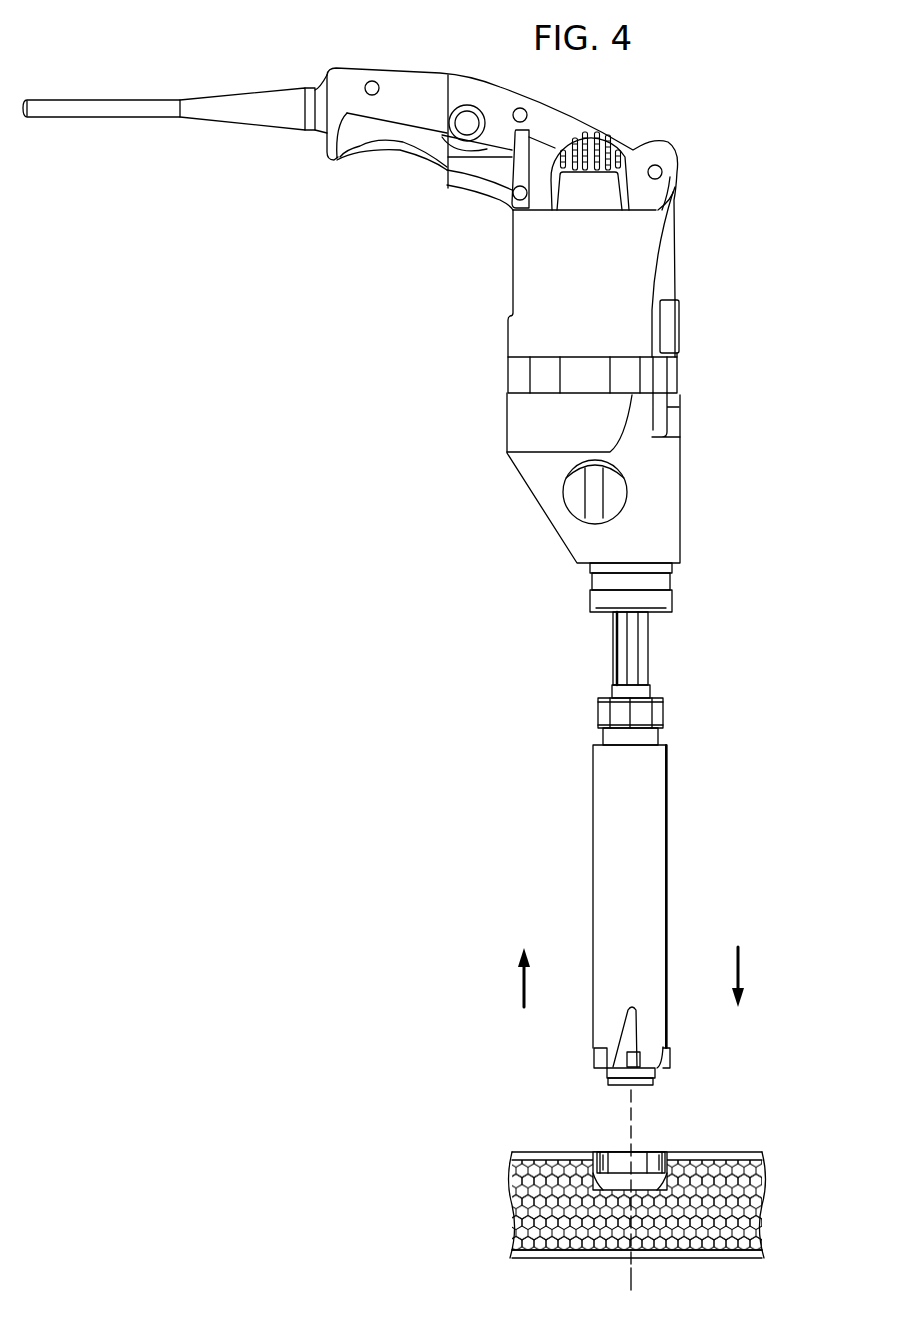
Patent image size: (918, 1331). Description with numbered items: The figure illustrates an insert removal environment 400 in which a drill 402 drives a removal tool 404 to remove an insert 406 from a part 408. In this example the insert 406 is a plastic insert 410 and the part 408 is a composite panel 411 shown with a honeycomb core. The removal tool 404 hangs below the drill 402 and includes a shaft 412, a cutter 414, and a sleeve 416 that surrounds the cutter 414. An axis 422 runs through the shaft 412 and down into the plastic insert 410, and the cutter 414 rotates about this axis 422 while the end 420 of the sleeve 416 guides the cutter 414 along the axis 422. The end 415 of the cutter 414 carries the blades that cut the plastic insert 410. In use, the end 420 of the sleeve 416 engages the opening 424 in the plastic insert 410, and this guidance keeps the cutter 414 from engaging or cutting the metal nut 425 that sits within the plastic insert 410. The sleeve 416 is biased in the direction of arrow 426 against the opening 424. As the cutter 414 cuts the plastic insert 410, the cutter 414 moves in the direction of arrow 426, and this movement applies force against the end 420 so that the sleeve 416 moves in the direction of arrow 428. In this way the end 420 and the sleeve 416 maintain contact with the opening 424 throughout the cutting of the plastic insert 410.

The insert removal environment 400 is at (116, 78).
The drill 402 is at (376, 62).
The removal tool 404 is at (588, 787).
The insert 406 is at (655, 1192).
The part 408 is at (763, 1200).
The plastic insert 410 is at (608, 1152).
The composite panel 411 is at (485, 1227).
The shaft 412 is at (613, 650).
The cutter 414 is at (593, 877).
The end of cutter 415 is at (670, 1068).
The sleeve 416 is at (603, 1072).
The end of sleeve 420 is at (643, 1088).
The axis 422 is at (632, 1272).
The opening 424 is at (638, 1152).
The metal nut 425 is at (663, 1152).
The arrow 426 is at (743, 977).
The arrow 428 is at (520, 980).